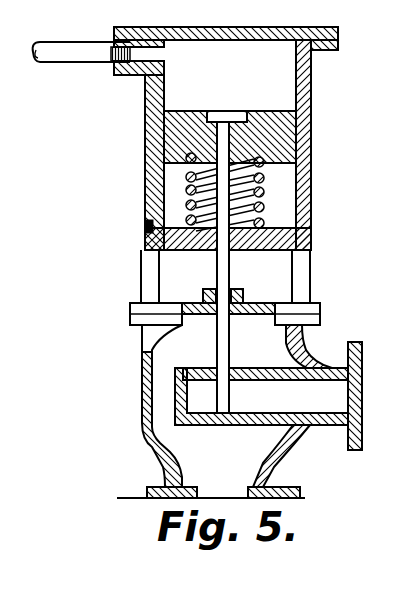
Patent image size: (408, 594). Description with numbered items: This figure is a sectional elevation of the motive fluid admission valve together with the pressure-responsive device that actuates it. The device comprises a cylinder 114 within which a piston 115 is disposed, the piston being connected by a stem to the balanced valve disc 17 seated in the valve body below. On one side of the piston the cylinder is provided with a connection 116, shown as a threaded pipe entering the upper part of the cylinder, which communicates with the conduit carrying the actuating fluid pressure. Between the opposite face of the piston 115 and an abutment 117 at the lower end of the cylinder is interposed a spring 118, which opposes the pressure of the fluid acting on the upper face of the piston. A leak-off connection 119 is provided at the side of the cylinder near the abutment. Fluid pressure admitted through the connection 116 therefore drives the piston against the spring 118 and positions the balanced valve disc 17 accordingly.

The cylinder 114 is at (312, 118).
The piston 115 is at (297, 150).
The connection 116 is at (113, 47).
The abutment 117 is at (306, 240).
The spring 118 is at (264, 199).
The leak-off connection 119 is at (145, 227).
The balanced valve disc 17 is at (197, 367).